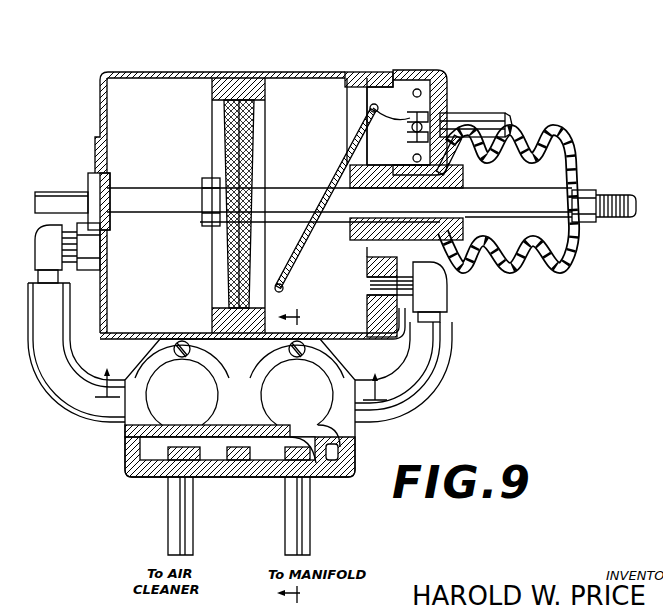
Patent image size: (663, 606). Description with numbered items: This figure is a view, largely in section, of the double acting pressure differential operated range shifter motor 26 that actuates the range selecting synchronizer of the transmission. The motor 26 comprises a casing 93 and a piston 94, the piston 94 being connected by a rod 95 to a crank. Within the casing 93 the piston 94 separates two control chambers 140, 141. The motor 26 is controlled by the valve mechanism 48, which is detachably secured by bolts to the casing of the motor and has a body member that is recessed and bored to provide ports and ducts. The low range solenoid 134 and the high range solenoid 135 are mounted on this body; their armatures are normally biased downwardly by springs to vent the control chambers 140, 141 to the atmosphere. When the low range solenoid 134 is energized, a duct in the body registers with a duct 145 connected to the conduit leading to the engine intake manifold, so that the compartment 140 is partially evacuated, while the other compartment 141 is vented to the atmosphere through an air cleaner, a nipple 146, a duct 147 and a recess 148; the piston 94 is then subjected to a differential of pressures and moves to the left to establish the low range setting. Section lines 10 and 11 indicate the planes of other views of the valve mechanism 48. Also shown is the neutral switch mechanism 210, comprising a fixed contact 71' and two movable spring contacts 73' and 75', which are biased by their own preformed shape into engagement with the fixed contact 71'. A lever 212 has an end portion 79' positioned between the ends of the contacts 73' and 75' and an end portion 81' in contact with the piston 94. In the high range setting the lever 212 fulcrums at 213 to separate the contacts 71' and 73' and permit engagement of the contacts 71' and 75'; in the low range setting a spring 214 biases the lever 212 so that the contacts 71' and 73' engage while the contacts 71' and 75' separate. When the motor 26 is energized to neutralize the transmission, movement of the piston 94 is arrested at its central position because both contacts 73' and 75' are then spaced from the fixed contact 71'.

The control chamber 140 is at (118, 80).
The casing 93 is at (167, 72).
The motor 26 is at (300, 69).
The control chamber 141 is at (350, 88).
The end portion of lever 79' is at (431, 120).
The movable spring contact 73' is at (445, 114).
The neutral switch mechanism 210 is at (447, 119).
The movable spring contact 75' is at (528, 124).
The spring 214 is at (370, 123).
The fulcrum 213 is at (350, 160).
The lever 212 is at (343, 173).
The fixed contact 71' is at (398, 122).
The piston 94 is at (225, 138).
The end portion of lever 81' is at (303, 292).
The section line 11 is at (304, 457).
The rod 95 is at (555, 222).
The section line 10 is at (249, 376).
The low range solenoid 134 is at (150, 407).
The high range solenoid 135 is at (323, 422).
The valve mechanism 48 is at (118, 458).
The duct 147 is at (167, 437).
The recess 148 is at (270, 465).
The nipple 146 is at (172, 518).
The duct 145 is at (330, 525).